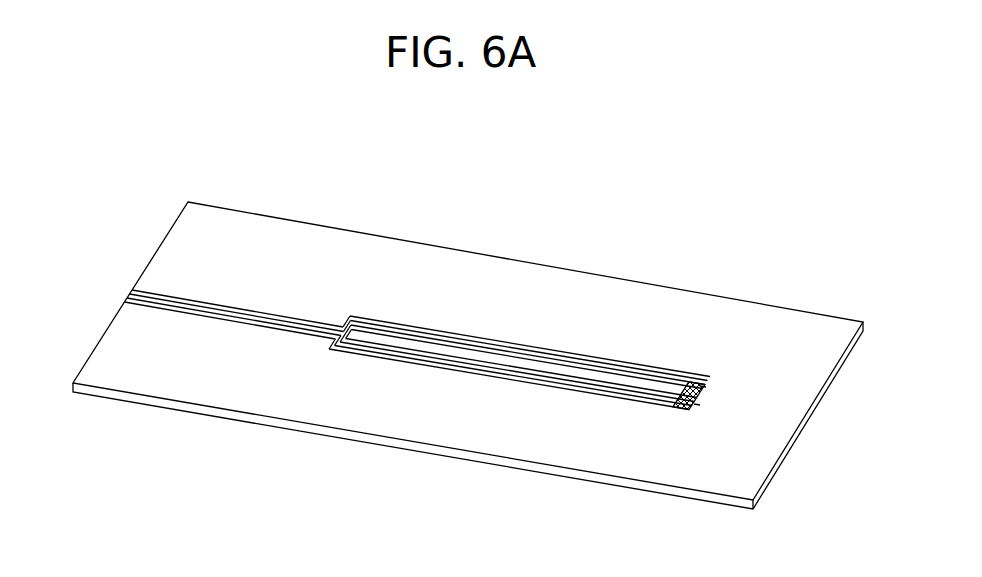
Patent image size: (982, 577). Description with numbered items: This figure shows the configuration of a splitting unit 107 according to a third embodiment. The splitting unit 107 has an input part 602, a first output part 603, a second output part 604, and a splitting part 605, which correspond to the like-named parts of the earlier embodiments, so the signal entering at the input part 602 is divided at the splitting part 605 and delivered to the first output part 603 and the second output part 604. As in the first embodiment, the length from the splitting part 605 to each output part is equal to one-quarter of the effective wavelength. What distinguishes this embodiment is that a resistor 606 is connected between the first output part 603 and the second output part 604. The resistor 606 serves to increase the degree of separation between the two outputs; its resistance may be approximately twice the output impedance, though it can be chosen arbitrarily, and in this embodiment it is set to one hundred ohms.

The splitting unit 107 is at (168, 410).
The input part 602 is at (132, 291).
The first output part 603 is at (703, 383).
The second output part 604 is at (700, 405).
The splitting part 605 is at (337, 322).
The resistor 606 is at (706, 393).